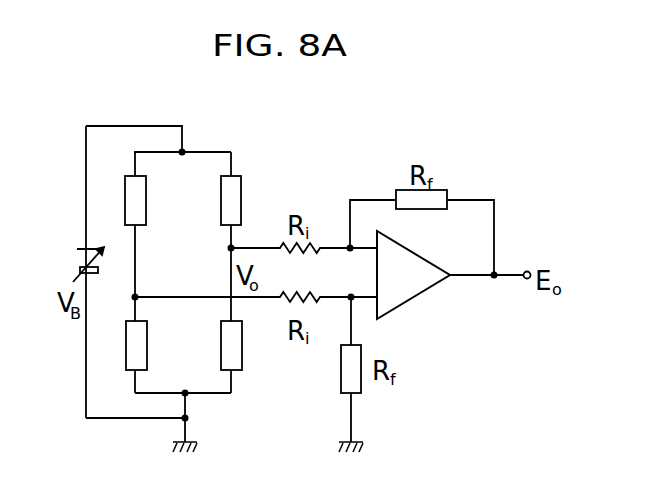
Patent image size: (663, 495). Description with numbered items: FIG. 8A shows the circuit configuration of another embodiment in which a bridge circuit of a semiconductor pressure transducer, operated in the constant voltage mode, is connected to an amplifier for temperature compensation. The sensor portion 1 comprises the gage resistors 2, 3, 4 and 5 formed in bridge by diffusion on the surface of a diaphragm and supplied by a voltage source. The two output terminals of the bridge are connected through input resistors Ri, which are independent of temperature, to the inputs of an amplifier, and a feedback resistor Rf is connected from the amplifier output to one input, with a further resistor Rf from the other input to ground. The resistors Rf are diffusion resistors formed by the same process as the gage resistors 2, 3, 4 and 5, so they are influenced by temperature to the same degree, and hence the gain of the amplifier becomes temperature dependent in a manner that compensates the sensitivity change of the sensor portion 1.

The sensor portion 1 is at (189, 282).
The gage resistor 2 is at (146, 191).
The gage resistor 3 is at (147, 340).
The gage resistor 4 is at (221, 364).
The gage resistor 5 is at (221, 214).